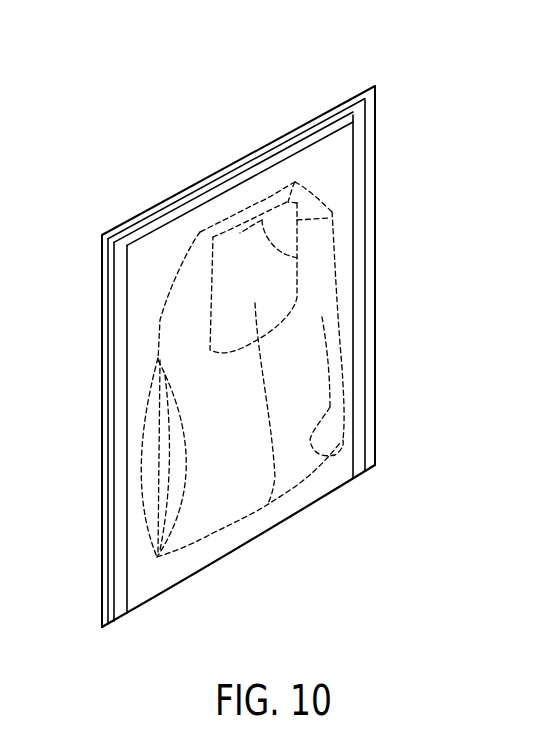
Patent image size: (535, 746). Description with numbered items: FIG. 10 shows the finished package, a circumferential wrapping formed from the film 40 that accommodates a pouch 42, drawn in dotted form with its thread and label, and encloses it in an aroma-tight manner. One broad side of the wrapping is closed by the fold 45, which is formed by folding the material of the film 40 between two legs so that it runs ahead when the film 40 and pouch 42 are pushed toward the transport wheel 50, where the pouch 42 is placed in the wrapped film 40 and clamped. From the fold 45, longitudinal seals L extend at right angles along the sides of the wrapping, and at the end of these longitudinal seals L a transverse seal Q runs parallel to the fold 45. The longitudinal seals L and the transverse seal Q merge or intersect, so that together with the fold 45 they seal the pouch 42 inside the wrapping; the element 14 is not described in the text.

The garment bag 14 is at (365, 470).
The film 40 is at (126, 275).
The pouch 42 is at (150, 558).
The fold 45 is at (232, 557).
The transport wheel 50 is at (375, 76).
The transverse seal Q is at (302, 125).
The longitudinal seals L is at (100, 407).